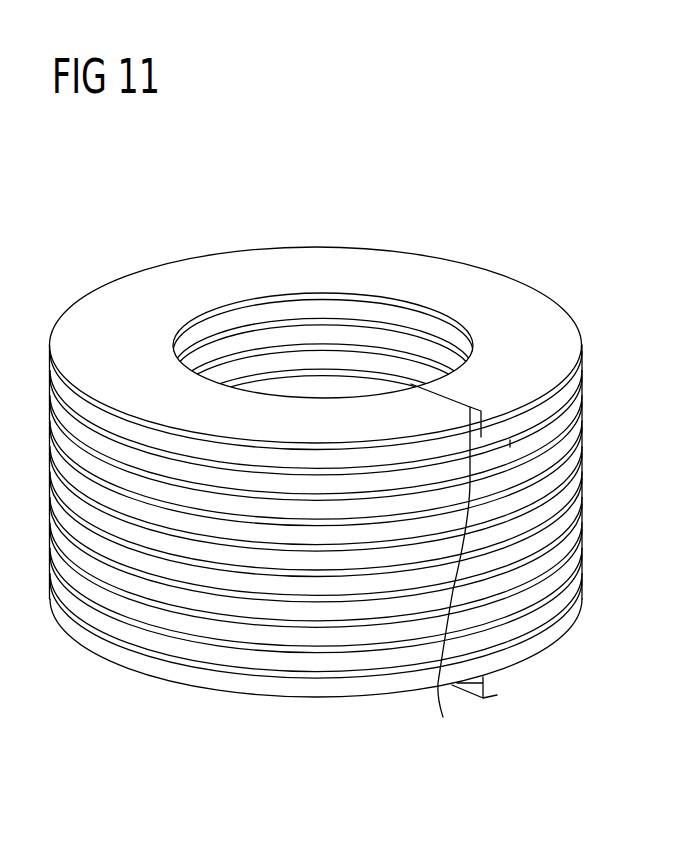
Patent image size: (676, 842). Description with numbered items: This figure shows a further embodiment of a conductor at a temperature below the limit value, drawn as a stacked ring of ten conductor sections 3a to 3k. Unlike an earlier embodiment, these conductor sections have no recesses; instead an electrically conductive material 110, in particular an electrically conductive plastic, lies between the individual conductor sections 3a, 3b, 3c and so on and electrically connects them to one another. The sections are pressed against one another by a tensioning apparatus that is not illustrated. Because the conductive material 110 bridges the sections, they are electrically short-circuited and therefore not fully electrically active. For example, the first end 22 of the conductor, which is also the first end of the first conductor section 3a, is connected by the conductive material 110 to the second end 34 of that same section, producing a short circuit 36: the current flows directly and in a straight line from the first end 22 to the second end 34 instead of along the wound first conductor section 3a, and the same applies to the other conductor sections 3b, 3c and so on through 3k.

The electrically conductive material 110 is at (304, 248).
The first conductor section 3a is at (582, 392).
The second conductor section 3b is at (582, 440).
The third conductor section 3c is at (582, 462).
The last conductor section 3k is at (582, 627).
The first end 22 is at (472, 410).
The second end 34 is at (510, 440).
The short circuit 36 is at (465, 713).